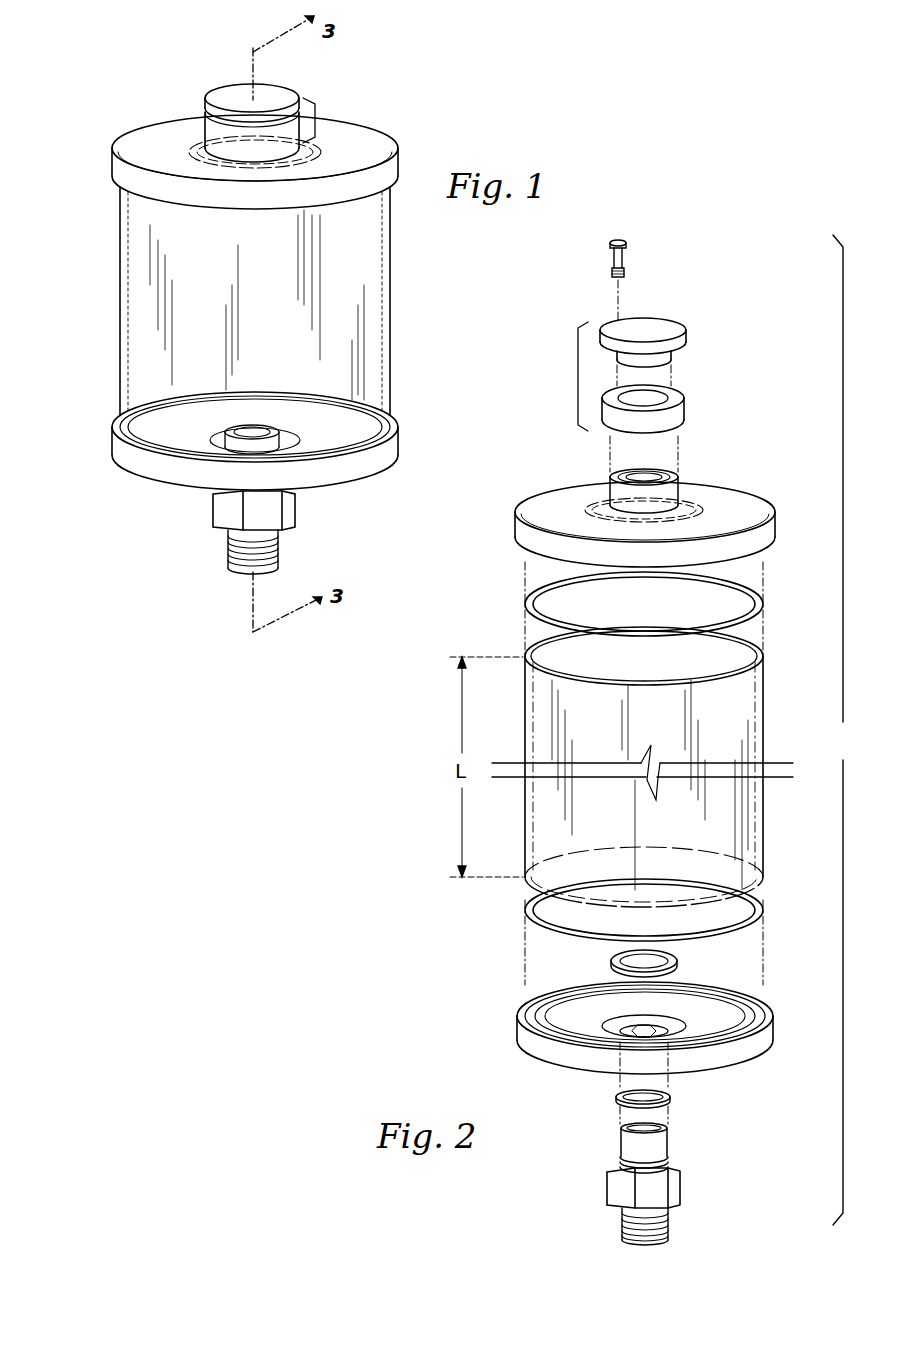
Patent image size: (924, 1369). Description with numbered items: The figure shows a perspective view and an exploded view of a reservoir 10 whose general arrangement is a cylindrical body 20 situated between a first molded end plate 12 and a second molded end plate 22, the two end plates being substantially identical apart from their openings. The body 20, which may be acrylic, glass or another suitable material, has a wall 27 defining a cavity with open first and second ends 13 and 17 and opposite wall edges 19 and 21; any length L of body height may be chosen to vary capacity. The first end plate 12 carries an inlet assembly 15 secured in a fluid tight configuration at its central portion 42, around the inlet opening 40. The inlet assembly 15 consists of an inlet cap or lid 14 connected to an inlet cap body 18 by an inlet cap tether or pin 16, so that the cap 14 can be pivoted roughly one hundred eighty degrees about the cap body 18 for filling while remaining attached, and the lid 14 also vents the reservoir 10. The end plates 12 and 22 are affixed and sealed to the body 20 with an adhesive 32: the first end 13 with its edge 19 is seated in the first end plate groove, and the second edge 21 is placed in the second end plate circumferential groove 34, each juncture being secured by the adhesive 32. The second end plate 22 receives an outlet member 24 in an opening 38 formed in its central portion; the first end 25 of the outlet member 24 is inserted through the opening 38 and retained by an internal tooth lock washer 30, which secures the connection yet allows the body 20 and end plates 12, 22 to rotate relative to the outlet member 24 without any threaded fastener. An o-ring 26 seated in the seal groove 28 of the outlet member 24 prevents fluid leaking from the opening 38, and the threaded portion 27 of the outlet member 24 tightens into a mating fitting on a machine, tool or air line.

In FIG. 1, the reservoir 10 is at (107, 105).
In FIG. 2, the reservoir 10 is at (842, 730).
In FIG. 1, the first molded end plate 12 is at (373, 147).
In FIG. 2, the first molded end plate 12 is at (562, 500).
In FIG. 2, the first end 13 is at (553, 660).
In FIG. 1, the inlet cap or lid 14 is at (286, 97).
In FIG. 2, the inlet cap or lid 14 is at (663, 328).
In FIG. 1, the inlet assembly 15 is at (314, 124).
In FIG. 2, the inlet assembly 15 is at (577, 383).
In FIG. 1, the inlet cap tether or pin 16 is at (227, 93).
In FIG. 2, the inlet cap tether or pin 16 is at (612, 256).
In FIG. 2, the second end 17 is at (758, 922).
In FIG. 1, the inlet cap body 18 is at (205, 128).
In FIG. 2, the inlet cap body 18 is at (686, 408).
In FIG. 2, the first wall edge 19 is at (757, 652).
In FIG. 1, the cylindrical body 20 is at (120, 320).
In FIG. 2, the cylindrical body 20 is at (765, 727).
In FIG. 2, the second wall edge 21 is at (765, 895).
In FIG. 1, the second molded end plate 22 is at (112, 445).
In FIG. 2, the second molded end plate 22 is at (518, 1020).
In FIG. 1, the outlet member 24 is at (296, 508).
In FIG. 2, the outlet member 24 is at (682, 1185).
In FIG. 2, the first end of outlet member 25 is at (620, 1130).
In FIG. 2, the o-ring 26 is at (616, 1093).
In FIG. 1, the wall / threaded portion 27 is at (228, 551).
In FIG. 2, the wall / threaded portion 27 is at (620, 1215).
In FIG. 2, the seal groove 28 is at (618, 1158).
In FIG. 2, the internal tooth lock washer 30 is at (612, 957).
In FIG. 2, the adhesive 32 is at (755, 590).
In FIG. 2, the second end plate circumferential groove 34 is at (758, 1005).
In FIG. 2, the opening 38 is at (735, 1039).
In FIG. 2, the opening 40 is at (646, 475).
In FIG. 2, the central portion 42 is at (670, 490).